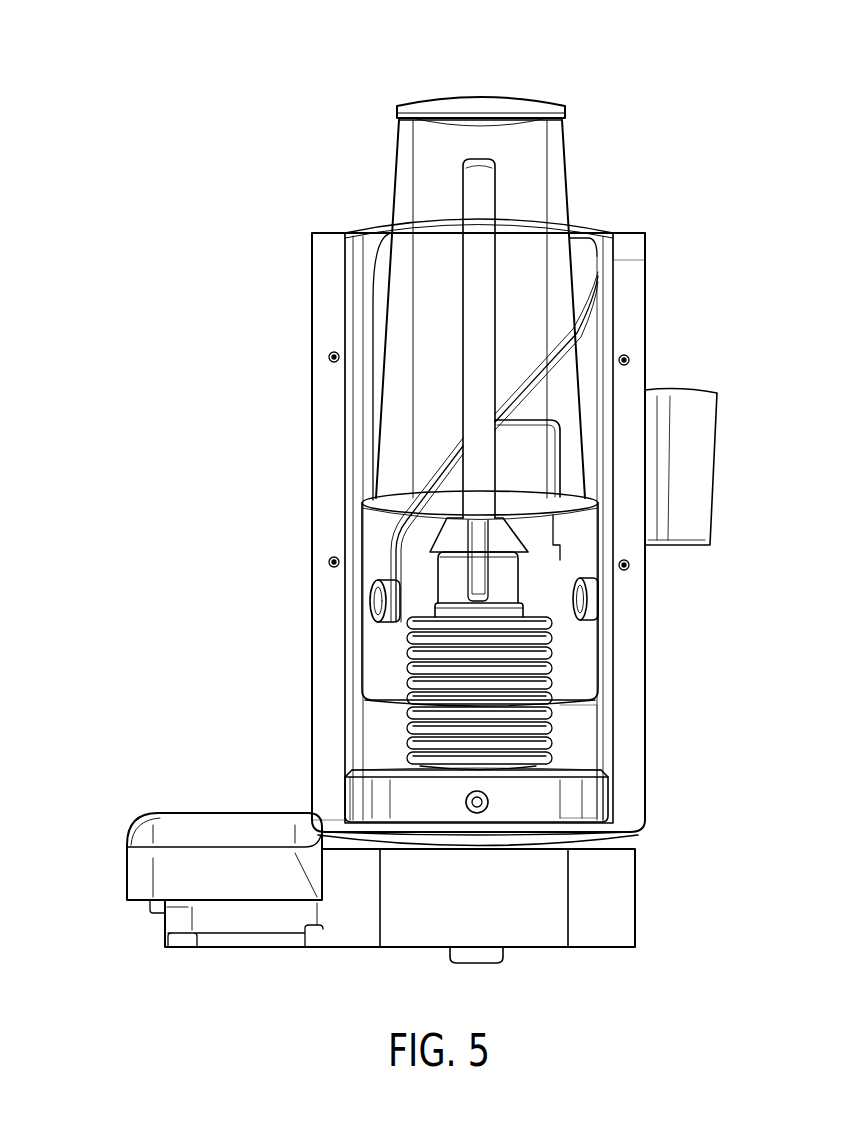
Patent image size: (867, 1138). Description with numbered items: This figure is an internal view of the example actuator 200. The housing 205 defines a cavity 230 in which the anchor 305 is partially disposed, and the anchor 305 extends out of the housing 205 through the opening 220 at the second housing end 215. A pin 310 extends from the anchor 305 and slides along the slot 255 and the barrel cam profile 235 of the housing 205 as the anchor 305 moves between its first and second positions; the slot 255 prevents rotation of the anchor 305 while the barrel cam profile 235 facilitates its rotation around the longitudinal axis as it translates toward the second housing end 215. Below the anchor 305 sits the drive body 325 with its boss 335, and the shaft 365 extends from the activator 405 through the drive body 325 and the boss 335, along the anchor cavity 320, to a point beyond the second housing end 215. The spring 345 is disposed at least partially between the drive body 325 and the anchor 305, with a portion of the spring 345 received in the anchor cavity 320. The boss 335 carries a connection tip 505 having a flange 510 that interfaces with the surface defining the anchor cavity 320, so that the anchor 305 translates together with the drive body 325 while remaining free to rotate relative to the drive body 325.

The actuator 200 is at (108, 75).
The housing 205 is at (337, 315).
The second housing end 215 is at (312, 232).
The opening 220 is at (590, 233).
The cavity 230 is at (582, 725).
The barrel cam profile 235 is at (435, 457).
The slot 255 is at (380, 557).
The anchor 305 is at (428, 174).
The pin 310 is at (380, 605).
The anchor cavity 320 is at (557, 637).
The drive body 325 is at (410, 793).
The boss 335 is at (510, 617).
The spring 345 is at (520, 768).
The shaft 365 is at (480, 242).
The activator 405 is at (568, 887).
The connection tip 505 is at (510, 592).
The flange 510 is at (510, 537).